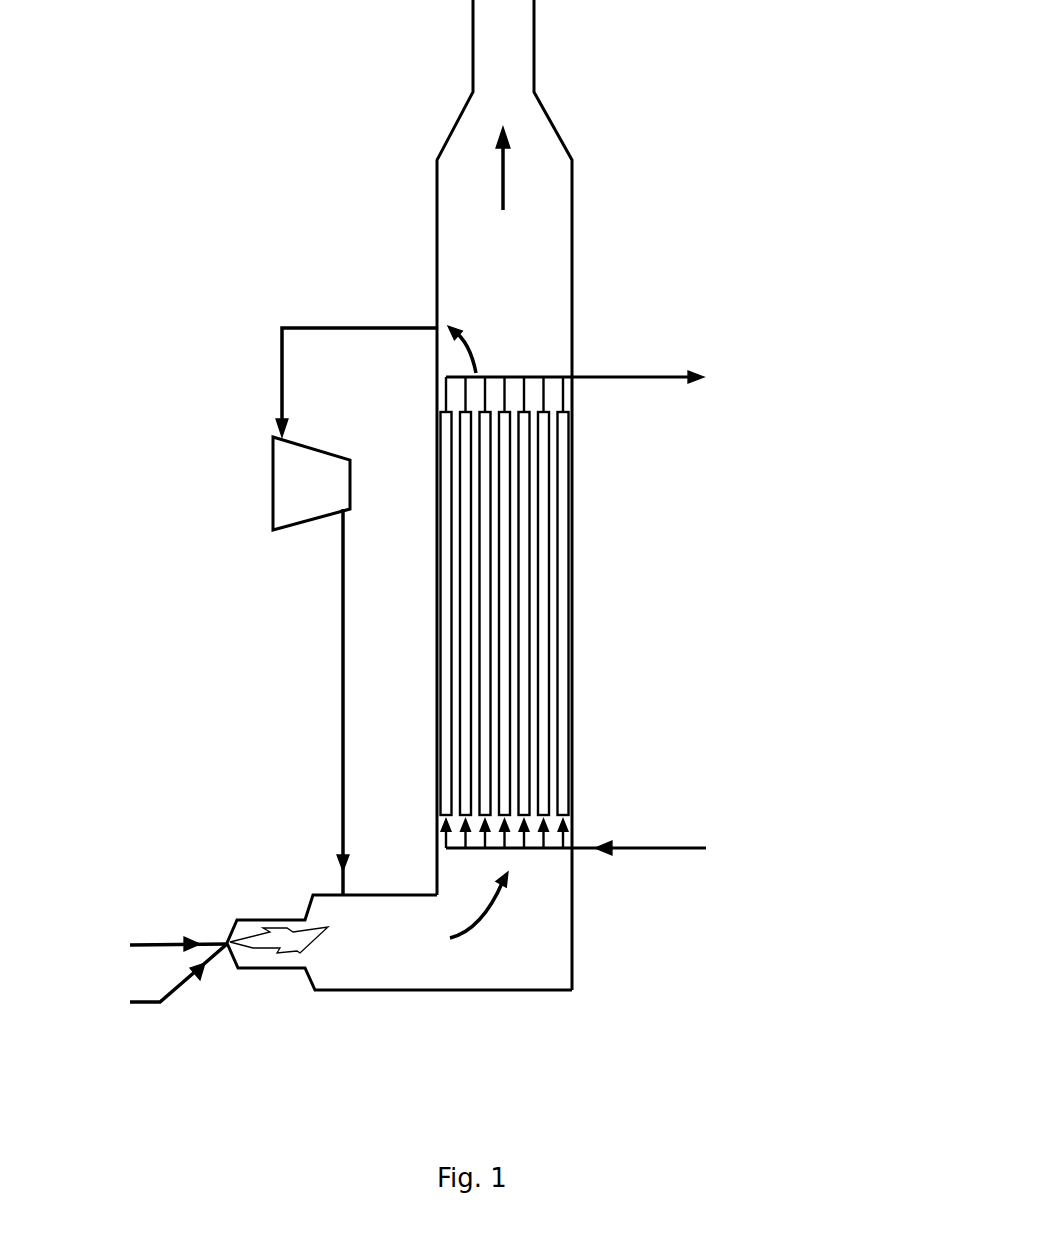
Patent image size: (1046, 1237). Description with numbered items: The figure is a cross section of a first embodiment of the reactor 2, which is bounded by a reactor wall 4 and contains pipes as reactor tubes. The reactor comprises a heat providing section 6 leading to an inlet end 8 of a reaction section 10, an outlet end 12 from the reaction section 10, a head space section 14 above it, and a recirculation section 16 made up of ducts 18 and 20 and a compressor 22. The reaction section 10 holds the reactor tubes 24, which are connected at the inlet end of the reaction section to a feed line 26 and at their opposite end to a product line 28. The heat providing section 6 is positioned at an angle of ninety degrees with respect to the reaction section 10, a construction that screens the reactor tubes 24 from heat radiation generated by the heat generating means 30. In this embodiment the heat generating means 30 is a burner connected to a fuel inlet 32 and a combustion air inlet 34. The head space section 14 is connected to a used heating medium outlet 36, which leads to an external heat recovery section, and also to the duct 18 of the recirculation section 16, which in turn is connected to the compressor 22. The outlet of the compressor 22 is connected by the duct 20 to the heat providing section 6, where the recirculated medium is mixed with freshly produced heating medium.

The reactor 2 is at (582, 495).
The reactor wall 4 is at (572, 290).
The heat providing section 6 is at (383, 951).
The inlet end 8 is at (541, 890).
The reaction section 10 is at (532, 609).
The outlet end 12 is at (519, 348).
The head space section 14 is at (519, 251).
The recirculation section 16 is at (242, 585).
The duct 18 is at (332, 327).
The duct 20 is at (340, 652).
The compressor 22 is at (323, 496).
The reactor tubes 24 is at (445, 445).
The feed line 26 is at (673, 853).
The product line 28 is at (667, 378).
The heat generating means 30 is at (232, 943).
The fuel inlet 32 is at (130, 947).
The combustion air inlet 34 is at (130, 1001).
The used heating medium outlet 36 is at (516, 67).